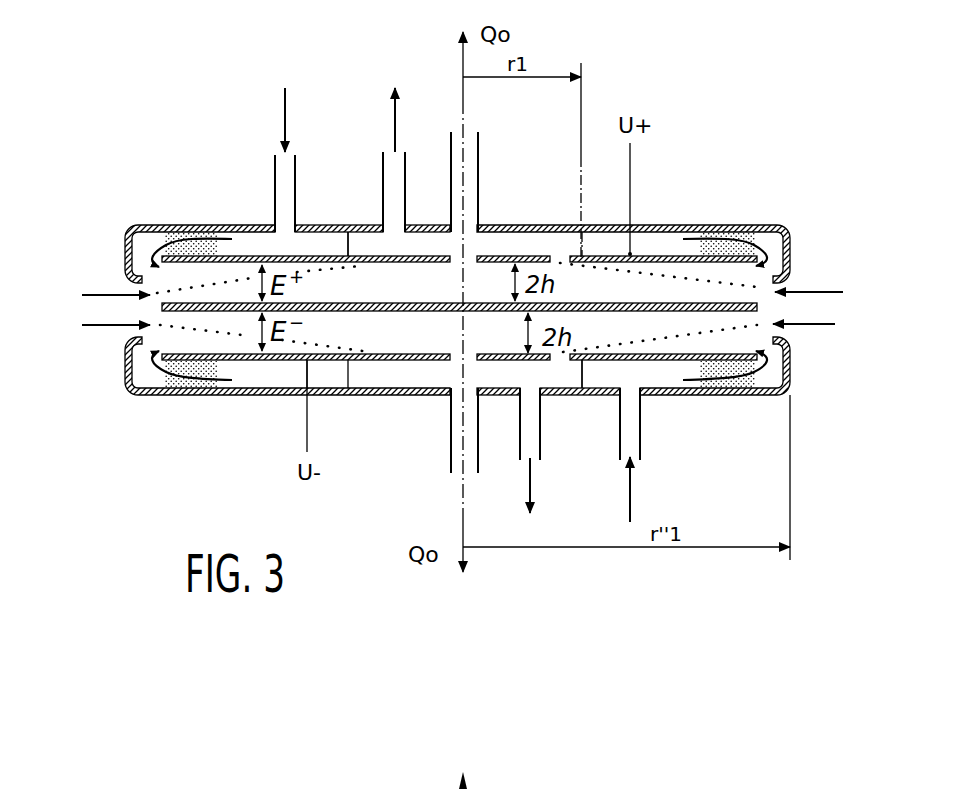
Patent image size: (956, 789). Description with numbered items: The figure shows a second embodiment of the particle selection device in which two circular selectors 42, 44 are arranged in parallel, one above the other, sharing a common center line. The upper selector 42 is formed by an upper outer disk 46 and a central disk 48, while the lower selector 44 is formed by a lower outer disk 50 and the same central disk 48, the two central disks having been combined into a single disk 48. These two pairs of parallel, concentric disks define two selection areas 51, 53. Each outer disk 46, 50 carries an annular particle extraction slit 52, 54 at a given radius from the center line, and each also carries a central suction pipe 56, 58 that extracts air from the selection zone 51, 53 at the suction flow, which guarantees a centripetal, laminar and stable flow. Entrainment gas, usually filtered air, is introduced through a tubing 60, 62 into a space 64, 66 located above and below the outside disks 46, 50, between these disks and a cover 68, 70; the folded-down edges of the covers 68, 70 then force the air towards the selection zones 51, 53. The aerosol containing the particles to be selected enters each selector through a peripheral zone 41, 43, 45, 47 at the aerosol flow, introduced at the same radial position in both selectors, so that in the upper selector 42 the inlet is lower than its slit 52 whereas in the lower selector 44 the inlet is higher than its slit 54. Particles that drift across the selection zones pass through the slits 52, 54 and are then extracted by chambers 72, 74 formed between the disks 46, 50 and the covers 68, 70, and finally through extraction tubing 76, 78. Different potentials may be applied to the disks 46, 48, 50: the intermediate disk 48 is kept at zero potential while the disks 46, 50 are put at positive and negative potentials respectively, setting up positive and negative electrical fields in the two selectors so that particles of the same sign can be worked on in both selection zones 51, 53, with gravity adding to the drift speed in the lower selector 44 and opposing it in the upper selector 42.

The peripheral zone 41 is at (130, 288).
The selector 42 is at (743, 193).
The peripheral zone 43 is at (783, 280).
The selector 44 is at (772, 425).
The peripheral zone 45 is at (137, 336).
The outer disk 46 is at (662, 242).
The peripheral zone 47 is at (782, 333).
The central disk 48 is at (417, 311).
The outer disk 50 is at (673, 365).
The selection area 51 is at (426, 293).
The annular particle extraction slit 52 is at (565, 248).
The selection area 53 is at (380, 344).
The annular particle extraction slit 54 is at (367, 395).
The central suction pipe 56 is at (480, 157).
The central suction pipe 58 is at (450, 463).
The tubing 60 is at (273, 165).
The tubing 62 is at (641, 440).
The space 64 is at (258, 238).
The space 66 is at (613, 370).
The cover 68 is at (174, 225).
The cover 70 is at (199, 395).
The chamber 72 is at (500, 245).
The chamber 74 is at (427, 375).
The extraction tubing 76 is at (383, 190).
The extraction tubing 78 is at (520, 447).